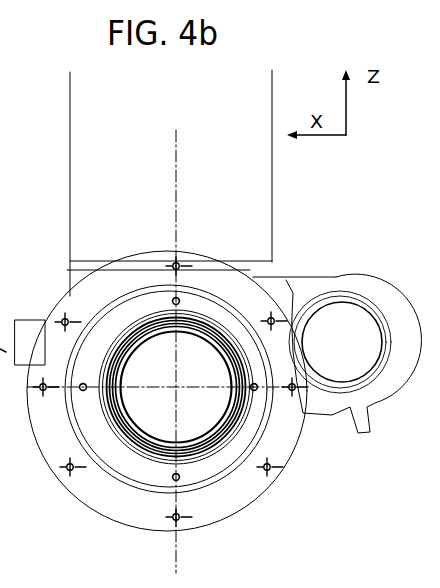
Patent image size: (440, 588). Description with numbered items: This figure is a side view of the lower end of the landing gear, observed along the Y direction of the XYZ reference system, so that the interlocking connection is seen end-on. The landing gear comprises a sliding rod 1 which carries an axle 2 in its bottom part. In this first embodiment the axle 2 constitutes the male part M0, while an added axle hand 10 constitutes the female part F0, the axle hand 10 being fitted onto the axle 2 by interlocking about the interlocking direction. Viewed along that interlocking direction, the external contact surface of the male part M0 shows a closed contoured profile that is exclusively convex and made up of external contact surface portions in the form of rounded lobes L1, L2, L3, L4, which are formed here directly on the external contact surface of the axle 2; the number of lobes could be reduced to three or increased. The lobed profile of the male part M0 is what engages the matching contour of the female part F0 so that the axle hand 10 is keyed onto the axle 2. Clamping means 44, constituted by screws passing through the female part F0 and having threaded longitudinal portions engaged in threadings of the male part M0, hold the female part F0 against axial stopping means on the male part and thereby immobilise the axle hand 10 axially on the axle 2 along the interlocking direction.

The sliding rod 1 is at (130, 88).
The female part F0 is at (133, 307).
The male part M0 is at (125, 327).
The clamping means 44 is at (176, 301).
The axle hand 10 is at (195, 505).
The axle 2 is at (183, 423).
The rounded lobe L1 is at (118, 445).
The rounded lobe L2 is at (112, 342).
The rounded lobe L3 is at (228, 333).
The rounded lobe L4 is at (227, 443).